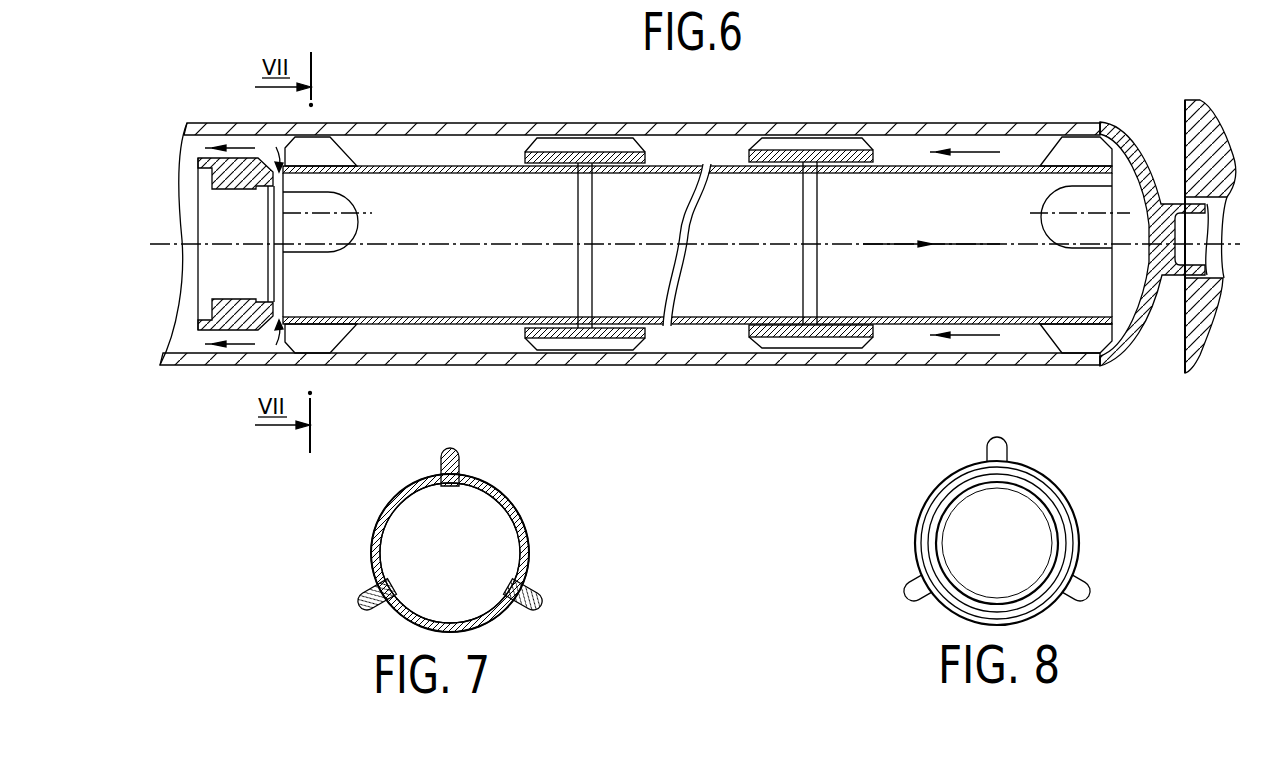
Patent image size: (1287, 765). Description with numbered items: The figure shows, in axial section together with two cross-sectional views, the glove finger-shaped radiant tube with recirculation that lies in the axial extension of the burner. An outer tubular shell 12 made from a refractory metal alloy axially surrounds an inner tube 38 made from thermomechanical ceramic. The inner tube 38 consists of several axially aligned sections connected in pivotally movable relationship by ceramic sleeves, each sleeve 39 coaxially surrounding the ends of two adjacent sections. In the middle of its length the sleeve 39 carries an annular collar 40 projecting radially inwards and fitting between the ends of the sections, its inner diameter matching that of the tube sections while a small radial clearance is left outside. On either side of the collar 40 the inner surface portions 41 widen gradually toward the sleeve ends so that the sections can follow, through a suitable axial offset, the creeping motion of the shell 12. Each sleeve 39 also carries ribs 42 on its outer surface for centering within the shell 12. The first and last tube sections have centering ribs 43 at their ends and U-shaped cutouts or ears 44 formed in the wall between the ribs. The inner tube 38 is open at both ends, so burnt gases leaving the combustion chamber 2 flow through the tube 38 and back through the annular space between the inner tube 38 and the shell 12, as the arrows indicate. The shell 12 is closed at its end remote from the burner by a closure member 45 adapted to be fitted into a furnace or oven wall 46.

In FIG. 6, the combustion chamber 2 is at (244, 228).
In FIG. 6, the outer tubular shell 12 is at (440, 130).
In FIG. 6, the inner tube 38 is at (438, 170).
In FIG. 6, the ceramic sleeve 39 is at (645, 156).
In FIG. 8, the ceramic sleeve 39 is at (1006, 522).
In FIG. 6, the annular collar 40 is at (577, 172).
In FIG. 8, the annular collar 40 is at (938, 512).
In FIG. 6, the inner surface portions 41 is at (618, 173).
In FIG. 6, the centering ribs 42 is at (815, 150).
In FIG. 8, the centering ribs 42 is at (1000, 450).
In FIG. 6, the centering ribs 43 is at (330, 158).
In FIG. 7, the centering ribs 43 is at (458, 461).
In FIG. 6, the U-shaped cutouts 44 is at (334, 232).
In FIG. 7, the U-shaped cutouts 44 is at (392, 506).
In FIG. 6, the closure member 45 is at (1138, 148).
In FIG. 6, the furnace wall 46 is at (1192, 312).